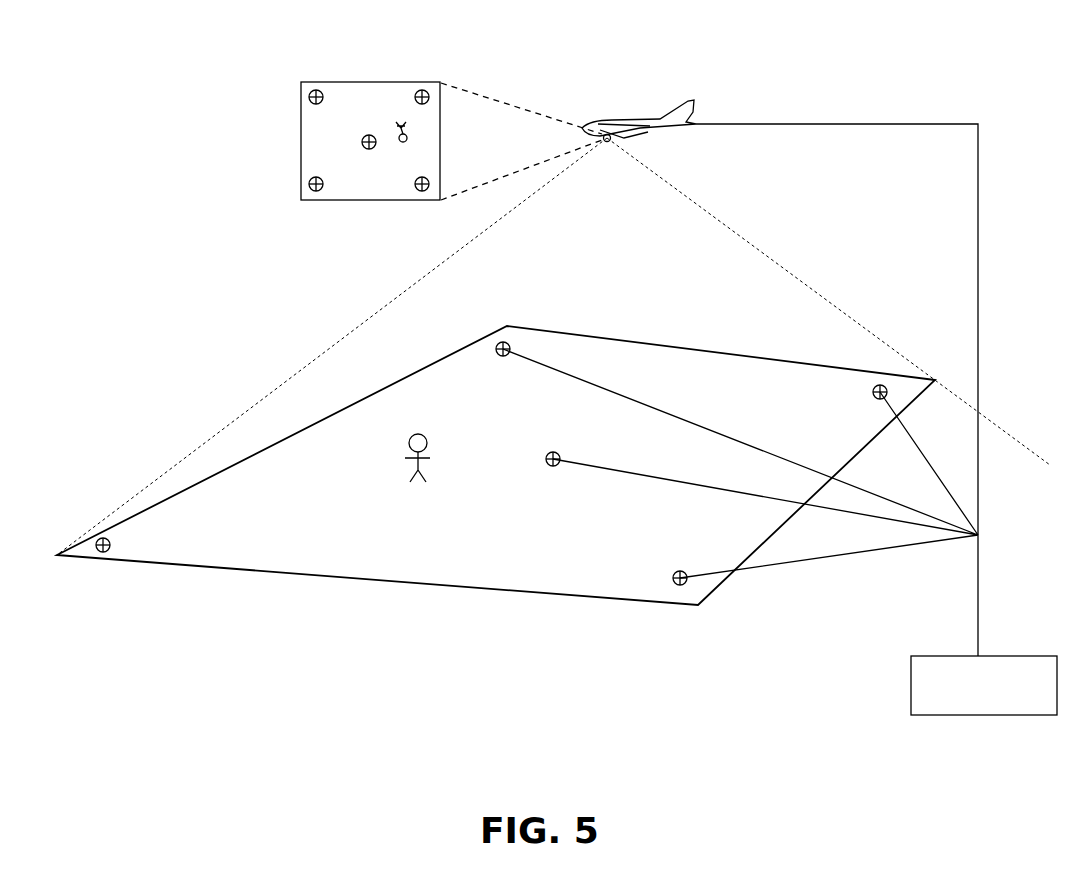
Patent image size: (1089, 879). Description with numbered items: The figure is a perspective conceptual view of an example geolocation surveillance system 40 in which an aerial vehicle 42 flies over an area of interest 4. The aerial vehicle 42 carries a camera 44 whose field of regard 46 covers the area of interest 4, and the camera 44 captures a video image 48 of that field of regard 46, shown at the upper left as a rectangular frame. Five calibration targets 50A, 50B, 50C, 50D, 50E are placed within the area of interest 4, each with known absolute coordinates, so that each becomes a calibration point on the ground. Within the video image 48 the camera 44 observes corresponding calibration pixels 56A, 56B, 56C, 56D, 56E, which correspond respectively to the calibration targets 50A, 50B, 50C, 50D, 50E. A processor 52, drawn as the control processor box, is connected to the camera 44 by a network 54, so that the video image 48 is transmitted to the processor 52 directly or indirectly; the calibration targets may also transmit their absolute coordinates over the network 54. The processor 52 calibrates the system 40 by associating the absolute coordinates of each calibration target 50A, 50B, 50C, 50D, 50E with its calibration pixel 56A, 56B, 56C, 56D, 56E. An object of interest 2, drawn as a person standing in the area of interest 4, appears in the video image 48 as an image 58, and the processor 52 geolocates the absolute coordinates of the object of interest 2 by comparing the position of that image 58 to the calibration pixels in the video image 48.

The object of interest 2 is at (428, 465).
The area of interest 4 is at (367, 583).
The surveillance system 40 is at (290, 178).
The aerial vehicle 42 is at (608, 120).
The camera 44 is at (612, 140).
The field of regard 46 is at (770, 260).
The video image 48 is at (362, 82).
The calibration target 50A is at (498, 355).
The calibration target 50B is at (872, 393).
The calibration target 50C is at (673, 578).
The calibration target 50D is at (110, 549).
The calibration target 50E is at (548, 466).
The processor 52 is at (911, 681).
The network 54 is at (979, 505).
The calibration pixel 56A is at (423, 192).
The calibration pixel 56B is at (320, 192).
The calibration pixel 56C is at (318, 89).
The calibration pixel 56D is at (425, 89).
The calibration pixel 56E is at (376, 150).
The image of object of interest 58 is at (407, 138).